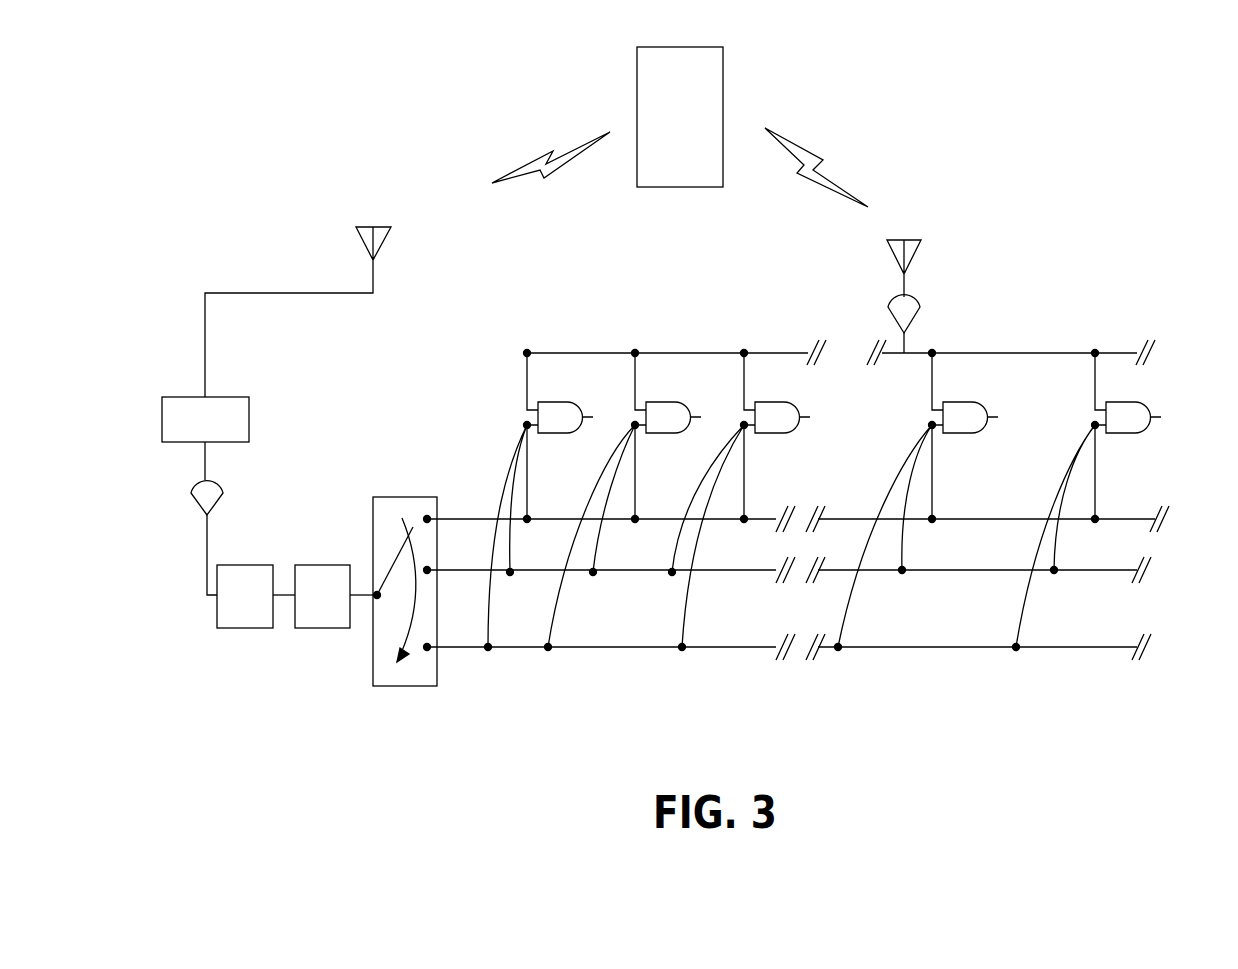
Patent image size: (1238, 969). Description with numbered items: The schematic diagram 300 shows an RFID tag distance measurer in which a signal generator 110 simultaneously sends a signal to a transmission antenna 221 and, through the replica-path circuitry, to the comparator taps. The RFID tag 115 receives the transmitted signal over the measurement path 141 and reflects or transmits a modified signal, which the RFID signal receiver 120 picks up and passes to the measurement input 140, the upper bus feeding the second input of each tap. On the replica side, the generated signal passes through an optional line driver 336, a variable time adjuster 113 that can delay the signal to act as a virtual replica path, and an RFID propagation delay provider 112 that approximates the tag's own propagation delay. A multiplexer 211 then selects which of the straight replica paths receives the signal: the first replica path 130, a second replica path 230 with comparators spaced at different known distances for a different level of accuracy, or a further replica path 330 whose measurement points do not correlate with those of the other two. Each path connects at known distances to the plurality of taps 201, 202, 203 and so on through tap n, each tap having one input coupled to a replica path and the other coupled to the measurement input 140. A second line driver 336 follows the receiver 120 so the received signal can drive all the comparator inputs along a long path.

The schematic diagram 300 is at (340, 46).
The RFID tag 115 is at (661, 156).
The measurement path 141 is at (808, 149).
The transmission antenna 221 is at (372, 259).
The signal generator 110 is at (162, 419).
The line driver 336 is at (201, 511).
The variable time adjuster 113 is at (228, 610).
The RFID propagation delay provider 112 is at (305, 610).
The multiplexer 211 is at (406, 687).
The measurement input 140 is at (706, 351).
The first replica path 130 is at (1160, 518).
The second replica path 230 is at (1144, 570).
The replica path 330 is at (1144, 647).
The tap 201 is at (567, 440).
The tap 202 is at (665, 440).
The tap 203 is at (784, 440).
The tap n is at (964, 440).
The RFID signal receiver 120 is at (912, 263).